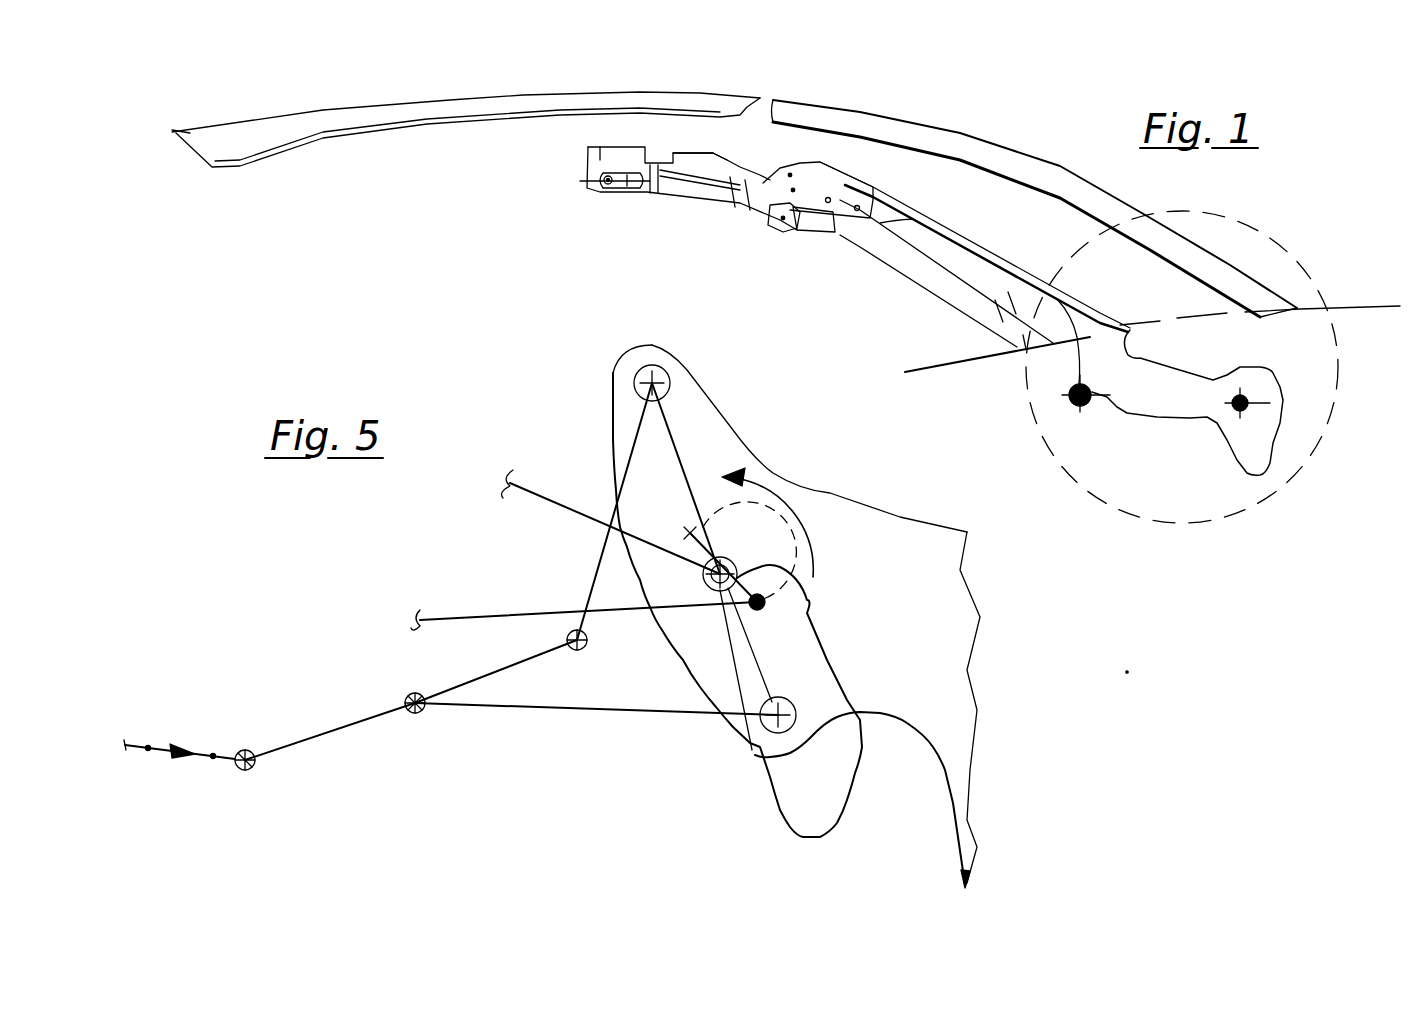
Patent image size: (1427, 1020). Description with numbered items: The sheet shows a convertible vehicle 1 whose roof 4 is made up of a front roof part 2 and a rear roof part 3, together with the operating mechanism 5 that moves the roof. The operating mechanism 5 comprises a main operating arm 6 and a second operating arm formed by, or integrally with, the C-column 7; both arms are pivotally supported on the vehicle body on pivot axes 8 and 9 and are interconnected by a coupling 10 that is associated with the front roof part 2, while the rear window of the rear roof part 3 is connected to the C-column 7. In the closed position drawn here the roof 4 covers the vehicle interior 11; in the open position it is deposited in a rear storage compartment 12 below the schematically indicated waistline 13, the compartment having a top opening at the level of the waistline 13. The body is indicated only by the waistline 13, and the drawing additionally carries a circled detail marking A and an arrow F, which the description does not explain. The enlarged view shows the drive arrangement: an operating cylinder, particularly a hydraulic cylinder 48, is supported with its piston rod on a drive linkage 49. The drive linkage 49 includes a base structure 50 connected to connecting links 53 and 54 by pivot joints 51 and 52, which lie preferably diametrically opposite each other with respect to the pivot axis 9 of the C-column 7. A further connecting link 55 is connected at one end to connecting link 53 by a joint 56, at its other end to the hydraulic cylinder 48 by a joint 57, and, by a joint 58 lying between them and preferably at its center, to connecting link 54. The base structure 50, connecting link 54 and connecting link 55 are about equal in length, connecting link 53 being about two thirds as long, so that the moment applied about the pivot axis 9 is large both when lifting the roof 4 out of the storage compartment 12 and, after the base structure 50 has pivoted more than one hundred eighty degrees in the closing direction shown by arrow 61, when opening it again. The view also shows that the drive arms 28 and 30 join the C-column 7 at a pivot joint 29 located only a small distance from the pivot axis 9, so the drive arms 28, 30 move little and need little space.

In FIG. 1, the convertible vehicle 1 is at (1078, 105).
In FIG. 1, the front roof part 2 is at (560, 102).
In FIG. 1, the rear roof part 3 is at (975, 152).
In FIG. 1, the roof 4 is at (802, 82).
In FIG. 1, the operating mechanism 5 is at (797, 244).
In FIG. 1, the main operating arm 6 is at (893, 250).
In FIG. 1, the C-column 7 is at (1153, 380).
In FIG. 5, the C-column 7 is at (934, 657).
In FIG. 1, the pivot axis 8 is at (1076, 403).
In FIG. 1, the pivot axis 9 is at (1237, 410).
In FIG. 5, the pivot axis 9 is at (705, 578).
In FIG. 1, the coupling 10 is at (708, 167).
In FIG. 1, the vehicle interior 11 is at (472, 207).
In FIG. 1, the storage compartment 12 is at (1360, 390).
In FIG. 1, the waistline 13 is at (1370, 308).
In FIG. 1, the detail region A is at (1285, 256).
In FIG. 1, the direction of travel F is at (662, 28).
In FIG. 5, the drive arm 28 is at (536, 490).
In FIG. 5, the pivot joint 29 is at (775, 623).
In FIG. 5, the drive arm 30 is at (463, 612).
In FIG. 5, the hydraulic cylinder 48 is at (162, 756).
In FIG. 5, the drive linkage 49 is at (602, 738).
In FIG. 5, the base structure 50 is at (680, 460).
In FIG. 5, the pivot joint 51 is at (668, 377).
In FIG. 5, the pivot joint 52 is at (753, 743).
In FIG. 5, the connecting link 53 is at (597, 557).
In FIG. 5, the connecting link 54 is at (548, 722).
In FIG. 5, the connecting link 55 is at (490, 672).
In FIG. 5, the joint 56 is at (590, 645).
In FIG. 5, the joint 57 is at (258, 765).
In FIG. 5, the joint 58 is at (402, 696).
In FIG. 5, the arrow 61 is at (804, 533).